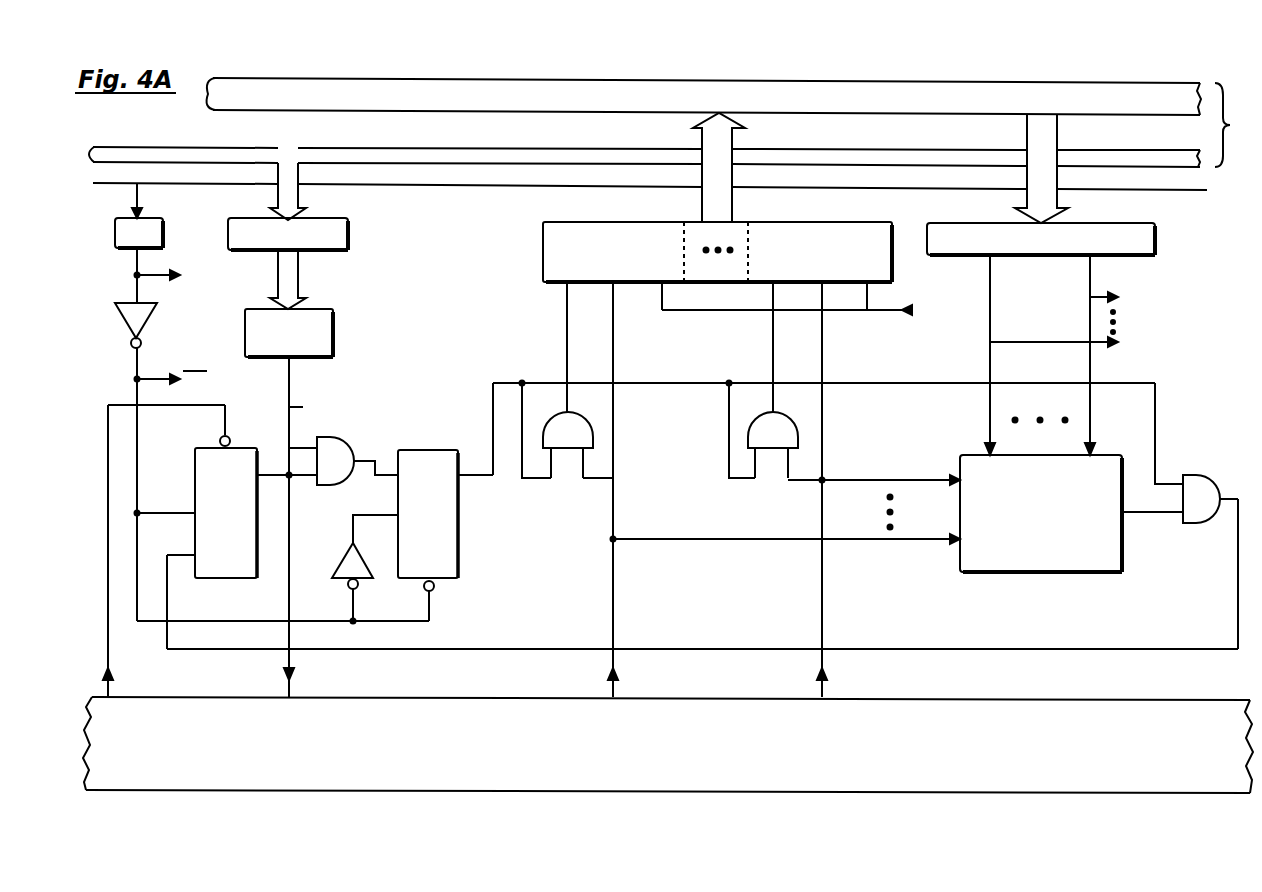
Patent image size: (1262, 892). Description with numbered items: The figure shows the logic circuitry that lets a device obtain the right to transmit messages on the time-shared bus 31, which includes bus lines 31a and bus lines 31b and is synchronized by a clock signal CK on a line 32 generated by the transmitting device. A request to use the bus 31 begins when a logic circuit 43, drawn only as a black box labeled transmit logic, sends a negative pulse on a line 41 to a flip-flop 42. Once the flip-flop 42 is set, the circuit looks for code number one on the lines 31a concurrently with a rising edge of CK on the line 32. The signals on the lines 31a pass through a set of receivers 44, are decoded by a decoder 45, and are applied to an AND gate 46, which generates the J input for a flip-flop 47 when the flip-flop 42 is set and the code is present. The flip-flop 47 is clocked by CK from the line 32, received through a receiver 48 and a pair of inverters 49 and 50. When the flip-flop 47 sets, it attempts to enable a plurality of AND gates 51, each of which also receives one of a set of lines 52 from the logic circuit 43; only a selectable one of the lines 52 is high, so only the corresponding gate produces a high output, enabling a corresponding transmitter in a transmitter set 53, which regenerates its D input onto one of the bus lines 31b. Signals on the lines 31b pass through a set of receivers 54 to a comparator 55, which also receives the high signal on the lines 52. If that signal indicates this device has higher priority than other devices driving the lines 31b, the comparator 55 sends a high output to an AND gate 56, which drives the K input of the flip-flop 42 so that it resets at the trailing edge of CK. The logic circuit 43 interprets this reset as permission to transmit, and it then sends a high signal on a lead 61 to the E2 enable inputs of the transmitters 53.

The time-shared bus 31 is at (672, 112).
The bus lines 31a is at (862, 150).
The bus lines 31b is at (878, 84).
The clock line 32 is at (866, 190).
The line 41 is at (108, 622).
The flip-flop 42 is at (244, 444).
The logic circuit 43 is at (705, 794).
The receivers 44 is at (350, 232).
The decoder 45 is at (335, 330).
The AND gate 46 is at (353, 452).
The flip-flop 47 is at (430, 450).
The receiver 48 is at (112, 232).
The inverter 49 is at (122, 330).
The inverter 50 is at (345, 565).
The AND gates 51 is at (572, 418).
The lines 52 is at (613, 560).
The transmitter set 53 is at (541, 240).
The receivers 54 is at (1157, 240).
The comparator 55 is at (1040, 575).
The AND gate 56 is at (1205, 472).
The lead 61 is at (912, 312).